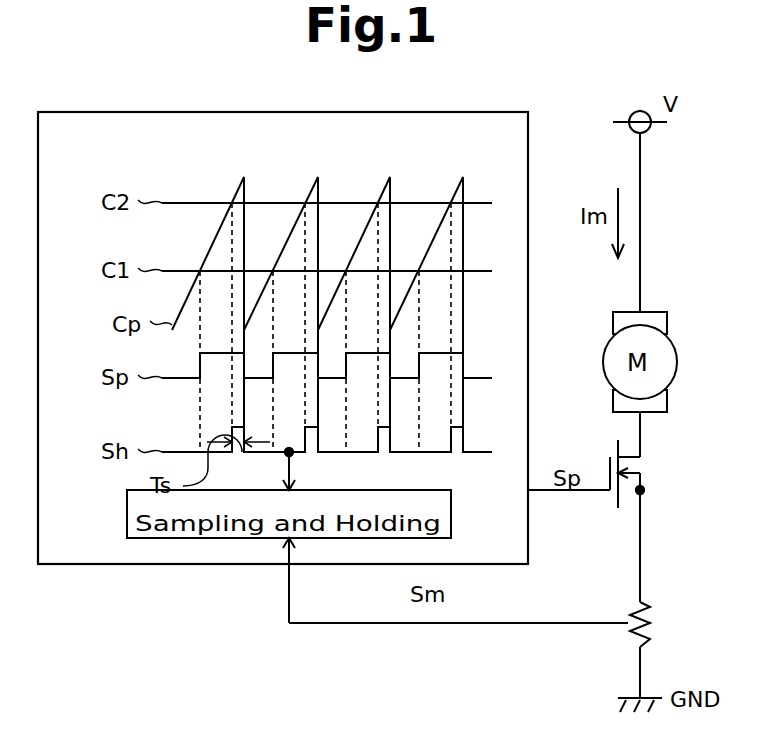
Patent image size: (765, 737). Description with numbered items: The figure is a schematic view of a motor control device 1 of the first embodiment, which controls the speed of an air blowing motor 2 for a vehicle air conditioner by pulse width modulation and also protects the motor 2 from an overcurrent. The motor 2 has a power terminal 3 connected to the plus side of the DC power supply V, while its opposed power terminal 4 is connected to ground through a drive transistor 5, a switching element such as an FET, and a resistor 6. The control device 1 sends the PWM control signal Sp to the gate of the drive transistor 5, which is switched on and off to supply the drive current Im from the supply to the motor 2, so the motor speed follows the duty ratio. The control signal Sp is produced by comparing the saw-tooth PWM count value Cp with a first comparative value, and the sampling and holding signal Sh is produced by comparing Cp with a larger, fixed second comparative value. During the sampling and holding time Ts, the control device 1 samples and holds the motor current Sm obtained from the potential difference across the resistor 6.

The motor control device 1 is at (470, 112).
The air blowing motor 2 is at (676, 340).
The power terminal 3 is at (655, 312).
The opposed power terminal 4 is at (660, 412).
The drive transistor 5 is at (610, 464).
The resistor 6 is at (648, 616).